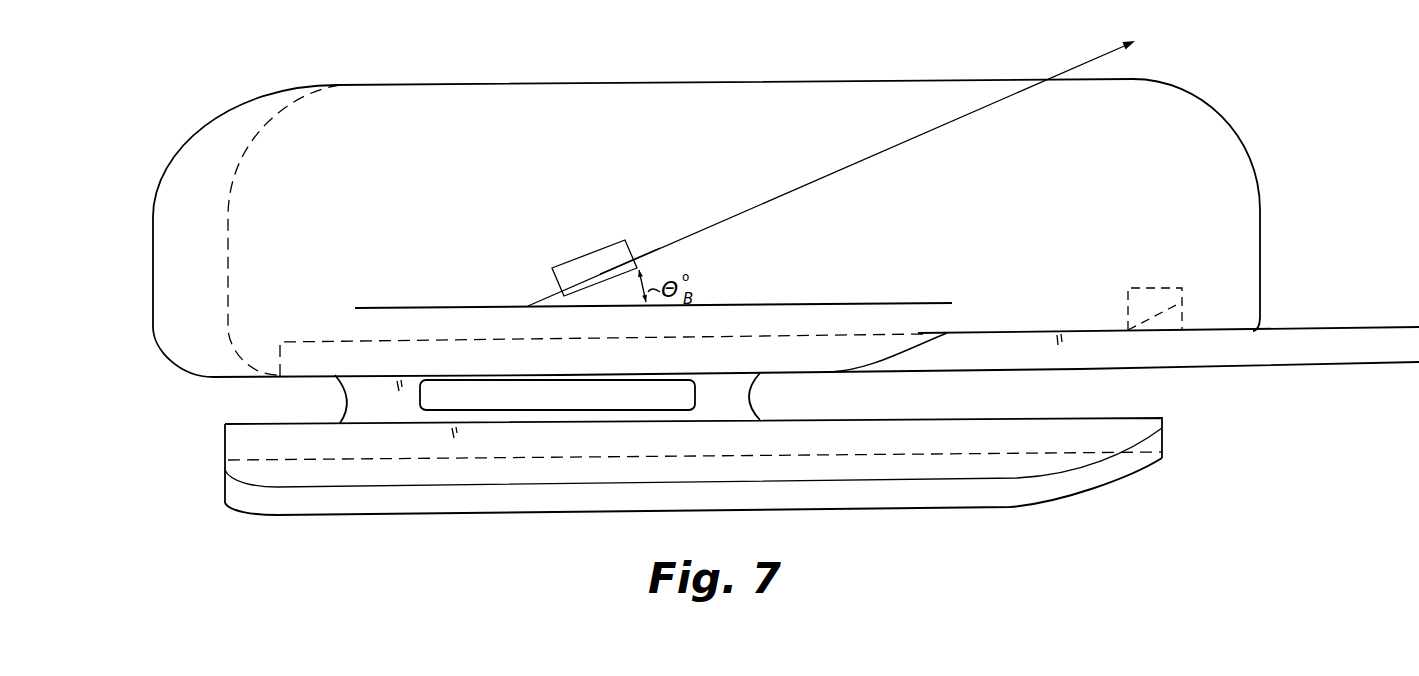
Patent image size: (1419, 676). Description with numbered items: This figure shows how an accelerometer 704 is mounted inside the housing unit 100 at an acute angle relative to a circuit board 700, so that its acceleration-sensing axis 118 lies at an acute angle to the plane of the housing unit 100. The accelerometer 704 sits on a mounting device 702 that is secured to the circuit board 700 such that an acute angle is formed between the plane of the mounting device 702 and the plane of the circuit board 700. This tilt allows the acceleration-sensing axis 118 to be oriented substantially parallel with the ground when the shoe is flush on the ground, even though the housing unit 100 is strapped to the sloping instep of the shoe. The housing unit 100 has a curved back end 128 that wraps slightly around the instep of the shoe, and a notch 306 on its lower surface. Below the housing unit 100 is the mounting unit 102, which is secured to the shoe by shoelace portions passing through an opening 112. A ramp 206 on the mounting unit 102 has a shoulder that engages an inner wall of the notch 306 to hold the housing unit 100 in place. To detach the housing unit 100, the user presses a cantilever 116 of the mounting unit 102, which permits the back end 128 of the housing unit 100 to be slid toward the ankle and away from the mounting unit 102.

The housing unit 100 is at (636, 78).
The back end 128 is at (151, 213).
The circuit board 700 is at (888, 303).
The acceleration-sensing axis 118 is at (1068, 68).
The accelerometer 704 is at (590, 253).
The mounting device 702 is at (670, 251).
The notch 306 is at (1148, 289).
The cantilever 116 is at (1297, 328).
The ramp 206 is at (1163, 325).
The opening 112 is at (507, 404).
The mounting unit 102 is at (1157, 400).